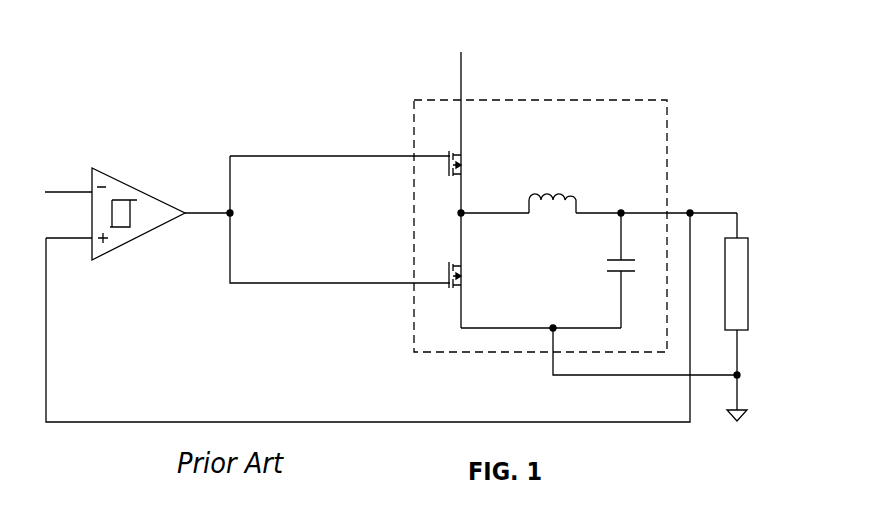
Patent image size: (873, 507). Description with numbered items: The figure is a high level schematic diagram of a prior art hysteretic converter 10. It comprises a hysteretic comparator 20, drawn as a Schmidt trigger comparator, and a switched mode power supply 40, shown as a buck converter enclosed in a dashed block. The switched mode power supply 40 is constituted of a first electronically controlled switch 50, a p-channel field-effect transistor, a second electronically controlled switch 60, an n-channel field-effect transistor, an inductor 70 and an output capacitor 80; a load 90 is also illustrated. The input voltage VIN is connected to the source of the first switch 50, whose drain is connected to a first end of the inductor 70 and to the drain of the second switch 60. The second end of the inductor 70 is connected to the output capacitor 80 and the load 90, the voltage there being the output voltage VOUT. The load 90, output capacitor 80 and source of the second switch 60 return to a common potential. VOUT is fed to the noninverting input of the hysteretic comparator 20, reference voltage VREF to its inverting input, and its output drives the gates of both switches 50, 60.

The hysteretic converter 10 is at (103, 60).
The hysteretic comparator 20 is at (117, 247).
The switched mode power supply 40 is at (667, 145).
The first electronically controlled switch 50 is at (466, 157).
The second electronically controlled switch 60 is at (466, 282).
The inductor 70 is at (576, 200).
The output capacitor 80 is at (613, 272).
The load 90 is at (748, 282).